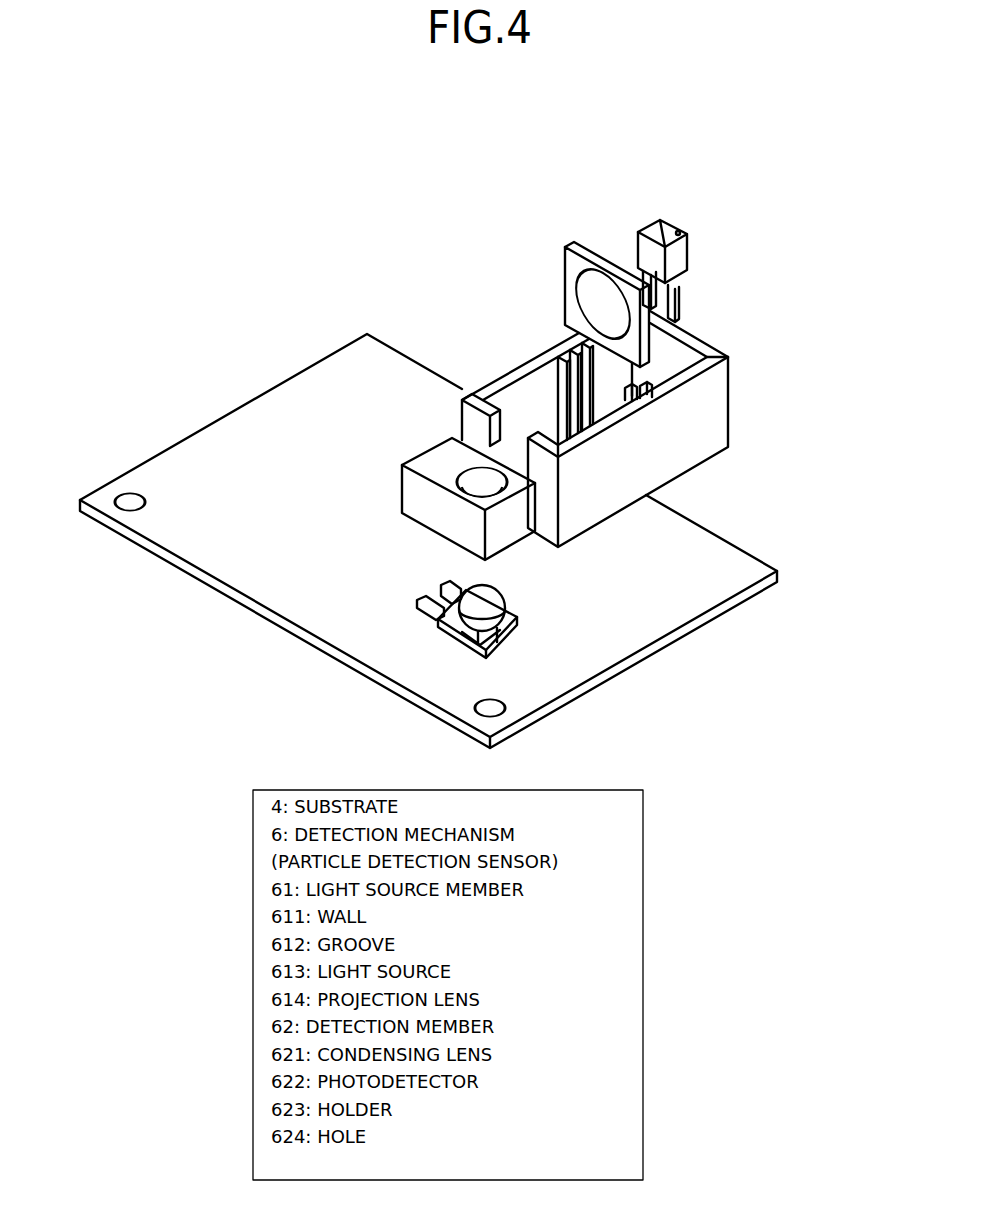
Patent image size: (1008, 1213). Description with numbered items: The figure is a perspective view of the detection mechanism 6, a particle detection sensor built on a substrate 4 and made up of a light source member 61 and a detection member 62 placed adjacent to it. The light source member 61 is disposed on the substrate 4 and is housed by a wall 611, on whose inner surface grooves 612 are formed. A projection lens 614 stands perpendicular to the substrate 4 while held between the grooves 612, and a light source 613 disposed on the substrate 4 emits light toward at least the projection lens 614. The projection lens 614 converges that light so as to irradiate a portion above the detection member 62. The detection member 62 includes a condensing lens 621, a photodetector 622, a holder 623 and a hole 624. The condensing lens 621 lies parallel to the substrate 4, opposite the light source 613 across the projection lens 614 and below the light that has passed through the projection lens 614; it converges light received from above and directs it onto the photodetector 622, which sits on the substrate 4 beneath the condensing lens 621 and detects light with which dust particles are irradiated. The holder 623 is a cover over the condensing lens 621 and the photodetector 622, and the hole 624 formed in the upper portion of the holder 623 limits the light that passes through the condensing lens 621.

The substrate 4 is at (172, 535).
The detection mechanism 6 is at (536, 459).
The light source member 61 is at (622, 265).
The wall 611 is at (733, 389).
The grooves 612 is at (622, 400).
The light source 613 is at (685, 250).
The projection lens 614 is at (583, 289).
The detection member 62 is at (520, 667).
The condensing lens 621 is at (490, 612).
The photodetector 622 is at (462, 627).
The holder 623 is at (381, 500).
The hole 624 is at (472, 484).